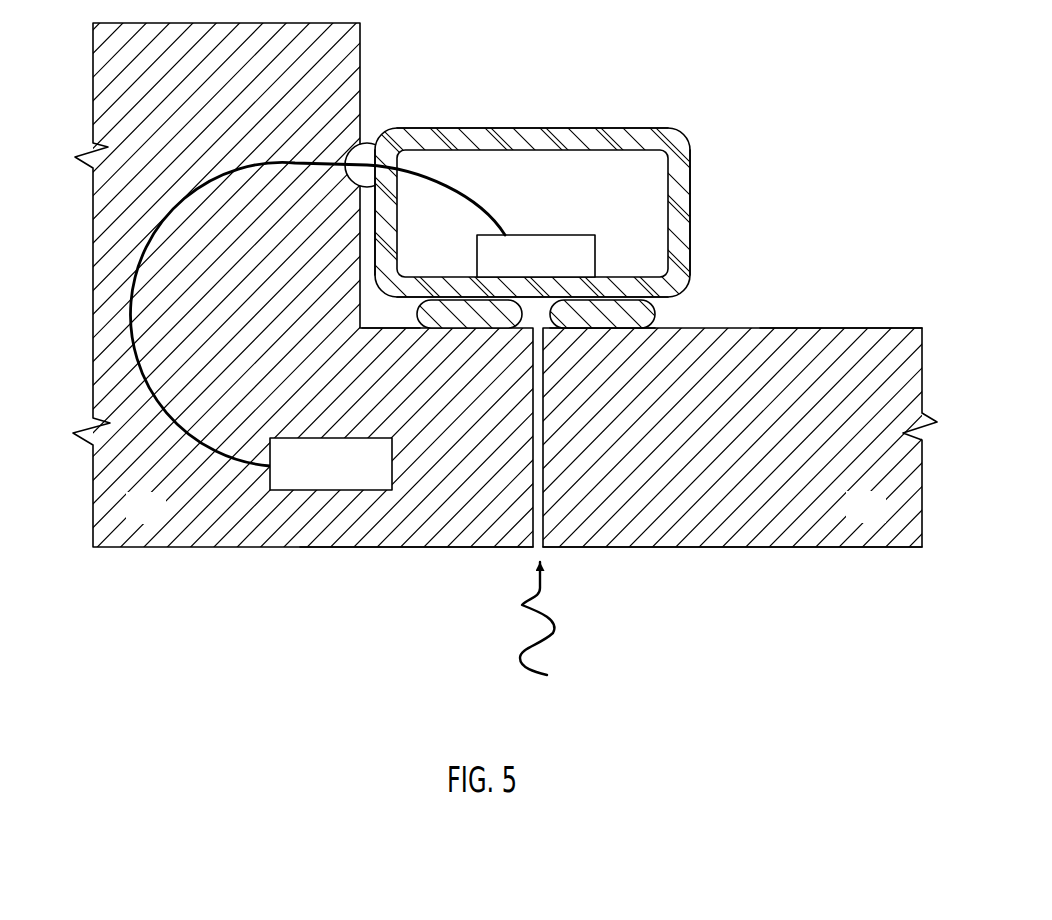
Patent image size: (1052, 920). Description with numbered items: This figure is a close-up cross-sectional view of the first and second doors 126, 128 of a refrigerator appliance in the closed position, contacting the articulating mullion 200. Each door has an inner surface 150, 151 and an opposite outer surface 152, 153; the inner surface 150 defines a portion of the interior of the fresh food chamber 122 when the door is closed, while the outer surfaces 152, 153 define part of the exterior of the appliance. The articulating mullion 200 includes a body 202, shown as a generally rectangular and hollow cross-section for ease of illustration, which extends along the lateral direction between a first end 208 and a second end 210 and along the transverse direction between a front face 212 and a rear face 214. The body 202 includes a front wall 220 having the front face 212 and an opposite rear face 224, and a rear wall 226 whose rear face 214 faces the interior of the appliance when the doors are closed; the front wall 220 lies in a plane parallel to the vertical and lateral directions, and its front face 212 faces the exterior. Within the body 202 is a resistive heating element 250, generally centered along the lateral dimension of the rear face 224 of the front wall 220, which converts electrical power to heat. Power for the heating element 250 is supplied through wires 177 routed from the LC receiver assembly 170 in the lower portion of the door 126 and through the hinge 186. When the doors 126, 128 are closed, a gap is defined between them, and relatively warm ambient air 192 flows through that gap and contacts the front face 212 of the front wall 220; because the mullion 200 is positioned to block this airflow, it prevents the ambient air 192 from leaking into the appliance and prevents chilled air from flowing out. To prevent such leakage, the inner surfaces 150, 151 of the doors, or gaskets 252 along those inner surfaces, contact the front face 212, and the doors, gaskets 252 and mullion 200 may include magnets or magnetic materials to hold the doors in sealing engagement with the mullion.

The fresh food chamber 122 is at (539, 170).
The first door 126 is at (163, 523).
The second door 128 is at (883, 522).
The inner surface 150 is at (377, 327).
The inner surface 151 is at (840, 328).
The outer surface 152 is at (392, 549).
The outer surface 153 is at (732, 549).
The LC receiver assembly 170 is at (347, 478).
The wires 177 is at (140, 300).
The hinge 186 is at (363, 145).
The ambient air 192 is at (524, 619).
The articulating mullion 200 is at (690, 113).
The body 202 is at (545, 128).
The first end 208 is at (375, 242).
The second end 210 is at (690, 220).
The front face 212 is at (663, 303).
The rear face 214 is at (620, 128).
The front wall 220 is at (418, 277).
The rear face 224 is at (627, 277).
The rear wall 226 is at (493, 140).
The resistive heating element 250 is at (575, 235).
The gaskets 252 is at (658, 325).